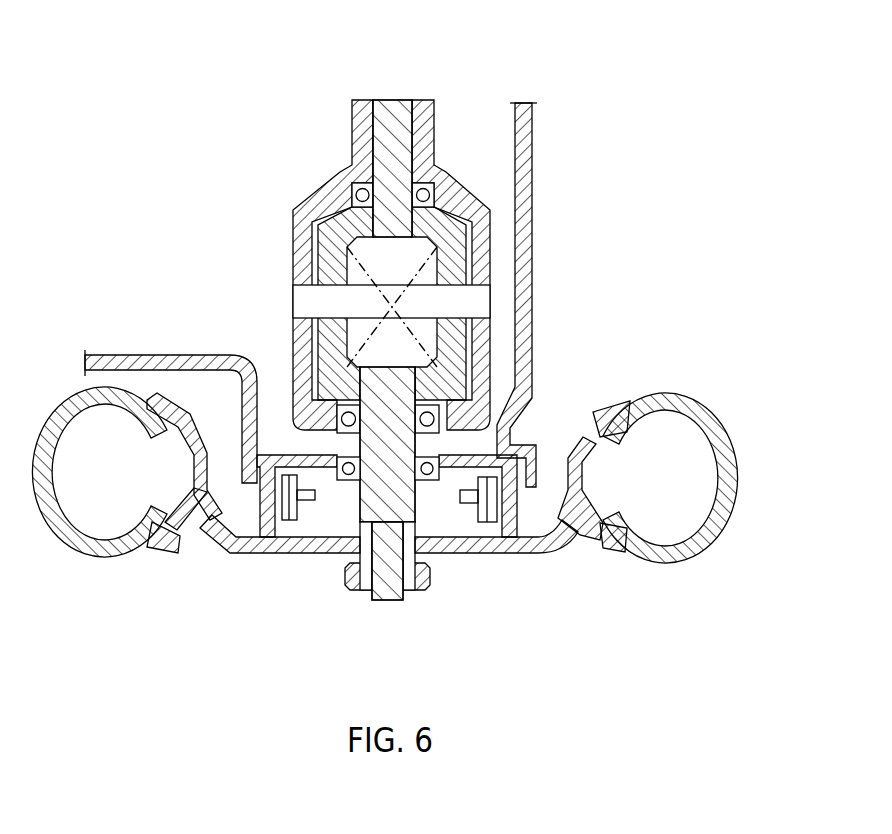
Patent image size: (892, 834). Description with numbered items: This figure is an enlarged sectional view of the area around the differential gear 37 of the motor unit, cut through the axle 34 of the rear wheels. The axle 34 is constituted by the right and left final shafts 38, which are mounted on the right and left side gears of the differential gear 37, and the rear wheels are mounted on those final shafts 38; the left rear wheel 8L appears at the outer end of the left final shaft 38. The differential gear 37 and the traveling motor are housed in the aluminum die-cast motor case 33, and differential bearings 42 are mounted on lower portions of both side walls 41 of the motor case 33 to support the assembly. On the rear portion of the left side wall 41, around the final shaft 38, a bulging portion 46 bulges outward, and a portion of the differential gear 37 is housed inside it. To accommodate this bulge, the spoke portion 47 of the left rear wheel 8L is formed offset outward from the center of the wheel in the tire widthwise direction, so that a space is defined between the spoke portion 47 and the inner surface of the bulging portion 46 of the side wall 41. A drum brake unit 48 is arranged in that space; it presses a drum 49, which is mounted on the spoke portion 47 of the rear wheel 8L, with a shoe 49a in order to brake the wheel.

The final shaft 38 is at (429, 343).
The axle 34 is at (400, 100).
The motor case 33 is at (533, 172).
The differential gear 37 is at (500, 256).
The side wall 41 is at (184, 385).
The left rear wheel 8L is at (742, 480).
The bulging portion 46 is at (240, 420).
The spoke portion 47 is at (212, 527).
The drum brake unit 48 is at (303, 520).
The differential bearing 42 is at (312, 518).
The drum 49 is at (530, 528).
The shoe 49a is at (480, 516).